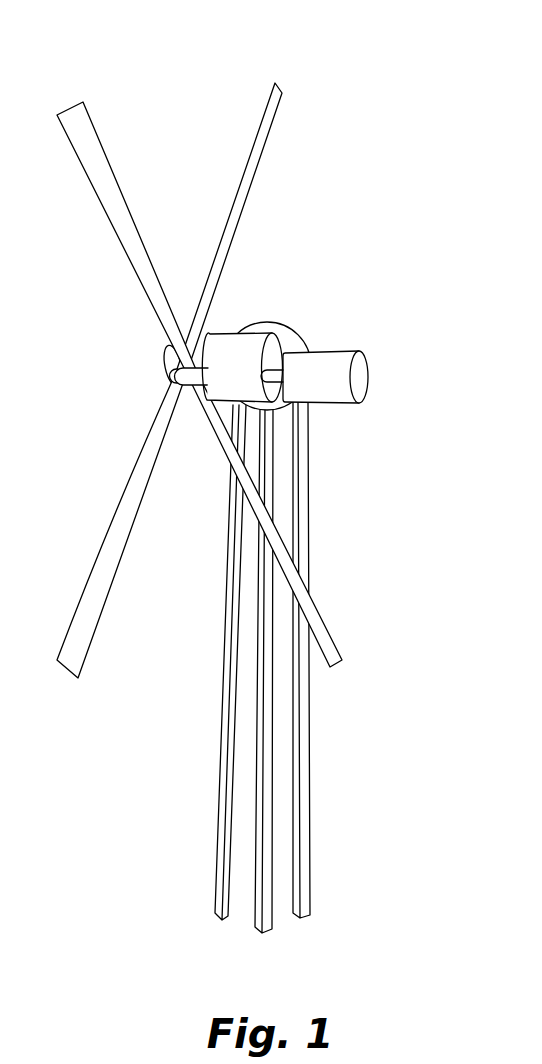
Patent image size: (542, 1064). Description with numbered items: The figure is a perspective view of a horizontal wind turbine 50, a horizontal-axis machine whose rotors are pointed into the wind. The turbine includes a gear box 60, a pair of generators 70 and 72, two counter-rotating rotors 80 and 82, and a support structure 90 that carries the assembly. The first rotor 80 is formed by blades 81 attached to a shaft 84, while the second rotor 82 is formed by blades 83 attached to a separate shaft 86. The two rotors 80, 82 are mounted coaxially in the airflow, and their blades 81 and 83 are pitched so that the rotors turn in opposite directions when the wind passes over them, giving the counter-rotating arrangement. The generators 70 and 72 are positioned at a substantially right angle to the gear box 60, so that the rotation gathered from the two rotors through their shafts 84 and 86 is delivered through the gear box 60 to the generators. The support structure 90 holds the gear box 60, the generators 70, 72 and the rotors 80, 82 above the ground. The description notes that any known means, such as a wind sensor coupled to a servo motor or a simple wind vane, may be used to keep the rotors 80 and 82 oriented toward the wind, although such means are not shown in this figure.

The horizontal wind turbine 50 is at (262, 490).
The gear box 60 is at (277, 322).
The generator 70 is at (353, 350).
The generator 72 is at (165, 362).
The rotor 80 is at (203, 415).
The blades 81 is at (262, 138).
The rotor 82 is at (213, 361).
The blades 83 is at (97, 160).
The shaft 84 is at (186, 384).
The shaft 86 is at (222, 373).
The support structure 90 is at (233, 787).